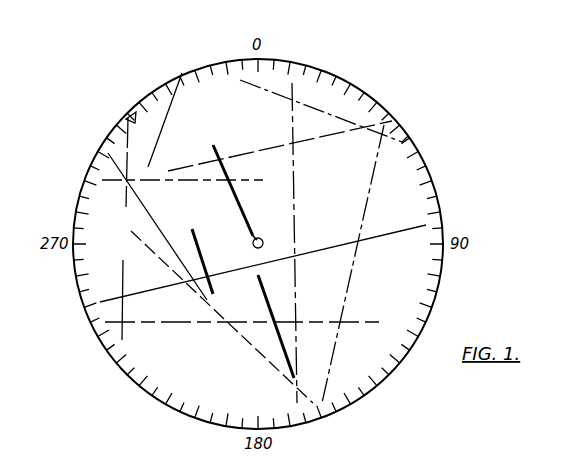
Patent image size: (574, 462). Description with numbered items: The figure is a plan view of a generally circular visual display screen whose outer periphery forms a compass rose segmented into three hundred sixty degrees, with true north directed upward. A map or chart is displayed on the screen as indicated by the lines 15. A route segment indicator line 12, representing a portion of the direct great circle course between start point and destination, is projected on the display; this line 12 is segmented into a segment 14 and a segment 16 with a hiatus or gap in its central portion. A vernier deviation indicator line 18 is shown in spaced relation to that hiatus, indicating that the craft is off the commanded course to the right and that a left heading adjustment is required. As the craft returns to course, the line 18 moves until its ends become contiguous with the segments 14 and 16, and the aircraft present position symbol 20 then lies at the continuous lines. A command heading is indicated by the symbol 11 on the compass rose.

The command heading symbol 11 is at (127, 114).
The route segment indicator line 12 is at (275, 299).
The route segment indicator segment 14 is at (272, 325).
The map or chart lines 15 is at (337, 134).
The route segment indicator segment 16 is at (226, 165).
The vernier deviation indicator line 18 is at (204, 282).
The aircraft present position symbol 20 is at (260, 238).